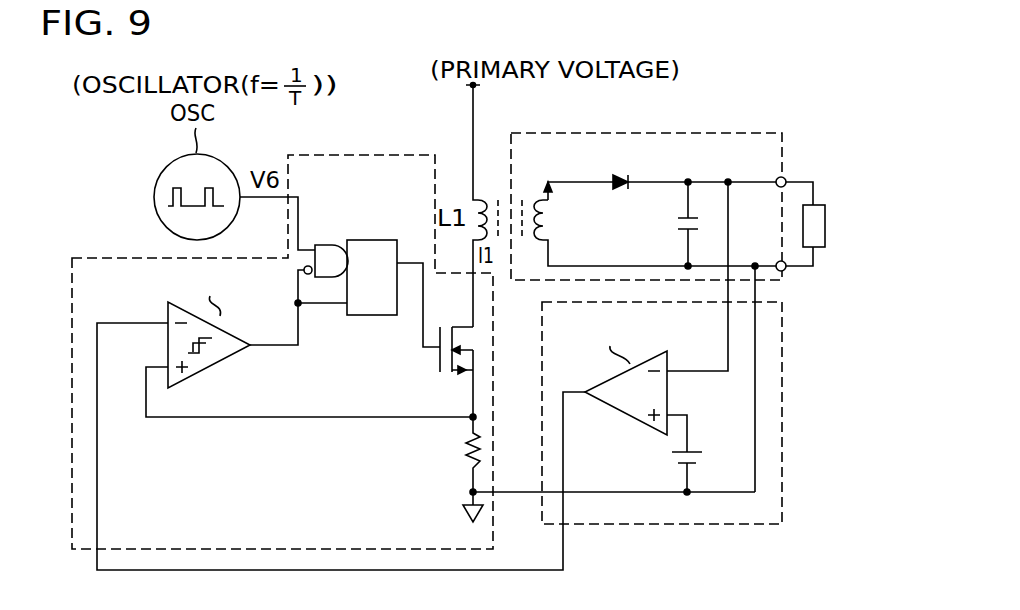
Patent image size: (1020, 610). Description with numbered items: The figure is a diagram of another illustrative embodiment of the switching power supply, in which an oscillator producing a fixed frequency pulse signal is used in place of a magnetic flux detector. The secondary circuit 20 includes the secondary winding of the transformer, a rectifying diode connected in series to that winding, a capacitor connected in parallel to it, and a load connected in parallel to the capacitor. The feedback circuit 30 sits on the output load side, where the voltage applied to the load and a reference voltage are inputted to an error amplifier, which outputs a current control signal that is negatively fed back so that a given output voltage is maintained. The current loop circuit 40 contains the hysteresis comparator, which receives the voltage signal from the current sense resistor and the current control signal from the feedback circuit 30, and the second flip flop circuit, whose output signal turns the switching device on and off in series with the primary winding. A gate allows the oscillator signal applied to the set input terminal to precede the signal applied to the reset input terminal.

The secondary circuit 20 is at (513, 133).
The feedback circuit 30 is at (594, 526).
The current loop circuit 40 is at (120, 549).